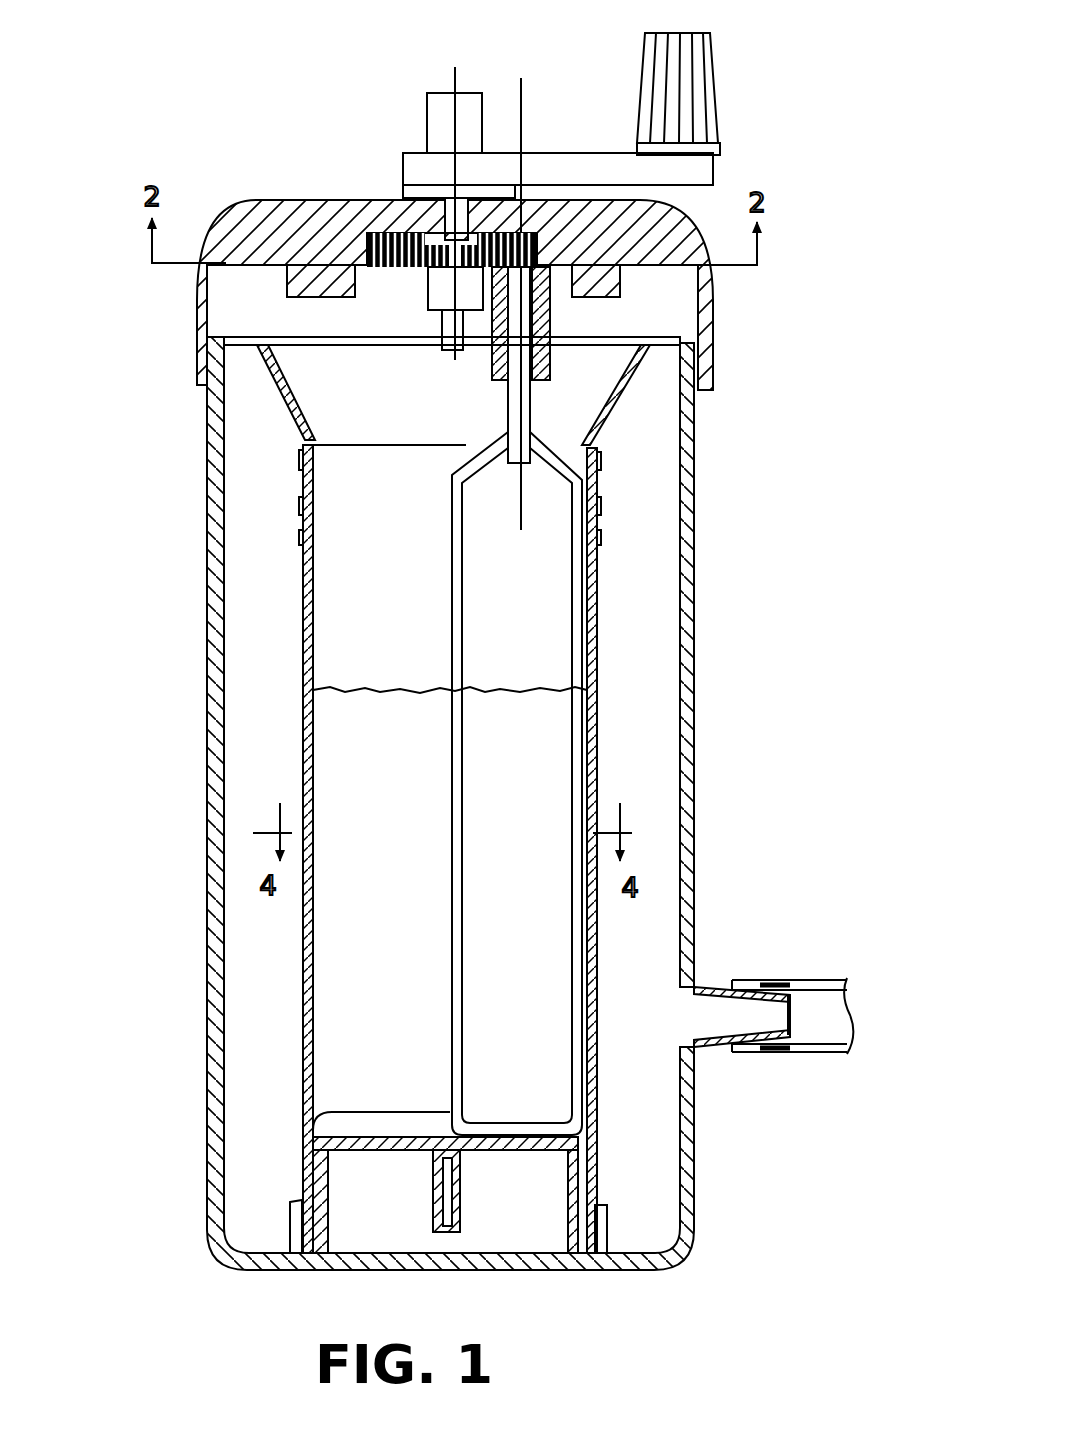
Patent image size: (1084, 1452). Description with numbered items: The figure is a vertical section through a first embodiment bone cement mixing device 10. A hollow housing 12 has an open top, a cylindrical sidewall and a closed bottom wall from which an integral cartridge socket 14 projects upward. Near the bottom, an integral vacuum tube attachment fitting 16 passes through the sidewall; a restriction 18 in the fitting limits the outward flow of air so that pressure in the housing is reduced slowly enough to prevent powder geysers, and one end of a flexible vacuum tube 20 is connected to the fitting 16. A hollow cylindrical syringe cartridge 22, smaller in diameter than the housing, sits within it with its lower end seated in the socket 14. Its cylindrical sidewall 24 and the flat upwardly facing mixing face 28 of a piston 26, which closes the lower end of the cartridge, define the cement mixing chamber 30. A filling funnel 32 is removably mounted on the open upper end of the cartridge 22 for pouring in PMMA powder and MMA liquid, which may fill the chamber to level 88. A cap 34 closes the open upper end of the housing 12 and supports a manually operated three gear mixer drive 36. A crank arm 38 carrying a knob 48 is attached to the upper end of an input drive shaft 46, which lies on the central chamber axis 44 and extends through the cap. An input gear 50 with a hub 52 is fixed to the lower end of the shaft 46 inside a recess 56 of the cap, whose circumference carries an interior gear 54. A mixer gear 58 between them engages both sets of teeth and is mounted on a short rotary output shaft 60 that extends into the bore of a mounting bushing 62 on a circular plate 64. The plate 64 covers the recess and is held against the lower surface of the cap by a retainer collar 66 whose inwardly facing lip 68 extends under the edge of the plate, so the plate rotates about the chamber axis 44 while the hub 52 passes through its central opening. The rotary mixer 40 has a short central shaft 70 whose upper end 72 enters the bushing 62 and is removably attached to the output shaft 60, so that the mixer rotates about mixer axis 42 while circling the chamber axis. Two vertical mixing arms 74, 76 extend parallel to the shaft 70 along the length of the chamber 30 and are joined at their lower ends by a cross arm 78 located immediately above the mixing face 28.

The mixing device 10 is at (186, 103).
The hollow housing 12 is at (702, 758).
The cartridge socket 14 is at (296, 1212).
The vacuum tube attachment fitting 16 is at (698, 1050).
The restriction 18 is at (790, 1008).
The flexible vacuum tube 20 is at (787, 980).
The syringe cartridge 22 is at (300, 928).
The cylindrical sidewall 24 is at (597, 720).
The piston 26 is at (577, 1185).
The mixing face 28 is at (353, 1138).
The cement mixing chamber 30 is at (363, 950).
The filling funnel 32 is at (627, 378).
The cap 34 is at (299, 196).
The three gear mixer drive 36 is at (549, 220).
The crank arm 38 is at (548, 153).
The rotary mixer 40 is at (580, 464).
The mixer axis 42 is at (521, 127).
The central chamber axis 44 is at (455, 75).
The input drive shaft 46 is at (449, 218).
The knob 48 is at (697, 35).
The input gear 50 is at (430, 282).
The hub 52 is at (468, 312).
The interior gear 54 is at (385, 292).
The recess 56 is at (370, 243).
The mixer gear 58 is at (540, 258).
The rotary output shaft 60 is at (515, 272).
The mounting bushing 62 is at (533, 383).
The circular plate 64 is at (383, 270).
The retainer collar 66 is at (300, 278).
The inwardly facing lip 68 is at (350, 278).
The central shaft 70 is at (530, 437).
The upper end 72 is at (542, 284).
The vertical mixing arm 74 is at (452, 528).
The vertical mixing arm 76 is at (572, 572).
The cross arm 78 is at (528, 1127).
The level 88 is at (340, 693).